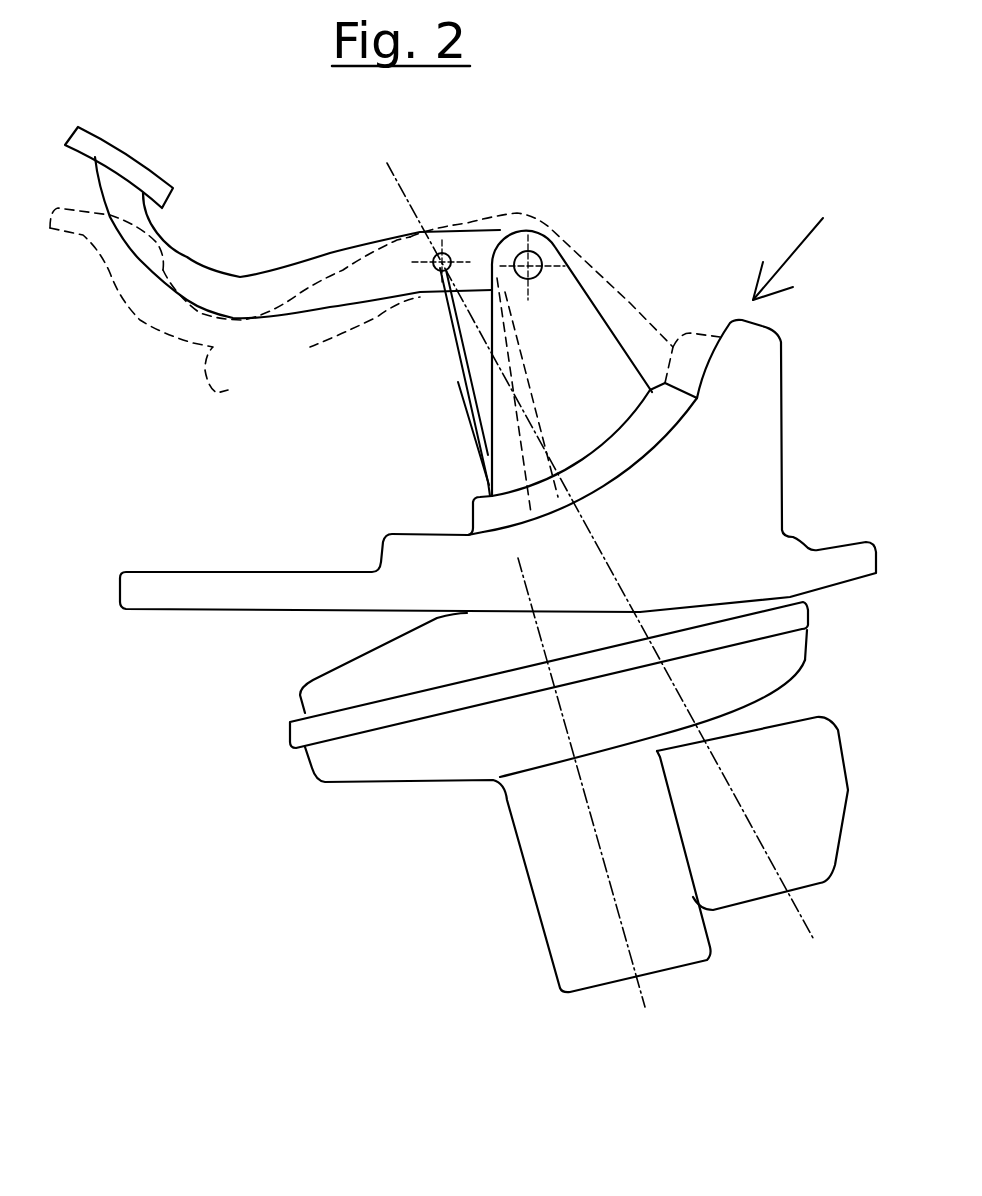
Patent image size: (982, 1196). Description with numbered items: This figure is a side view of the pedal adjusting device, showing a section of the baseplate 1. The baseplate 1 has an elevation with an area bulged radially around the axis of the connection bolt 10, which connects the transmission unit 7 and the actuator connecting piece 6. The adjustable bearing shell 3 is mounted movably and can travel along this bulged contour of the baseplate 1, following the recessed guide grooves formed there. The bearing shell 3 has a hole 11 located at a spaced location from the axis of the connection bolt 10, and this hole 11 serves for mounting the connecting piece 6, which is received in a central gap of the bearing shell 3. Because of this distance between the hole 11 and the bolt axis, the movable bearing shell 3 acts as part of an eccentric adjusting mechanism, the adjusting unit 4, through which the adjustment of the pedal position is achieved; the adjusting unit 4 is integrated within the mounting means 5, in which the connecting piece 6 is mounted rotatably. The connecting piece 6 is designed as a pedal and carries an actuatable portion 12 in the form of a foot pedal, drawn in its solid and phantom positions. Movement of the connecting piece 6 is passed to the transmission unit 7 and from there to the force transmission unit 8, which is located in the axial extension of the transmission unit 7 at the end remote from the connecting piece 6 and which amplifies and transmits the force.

The baseplate 1 is at (297, 595).
The bearing shell 3 is at (567, 320).
The adjusting unit 4 is at (630, 295).
The mounting means 5 is at (379, 171).
The actuator connecting piece 6 is at (173, 273).
The transmission unit 7 is at (463, 367).
The force transmission unit 8 is at (560, 852).
The connection bolt 10 is at (440, 256).
The hole 11 is at (537, 257).
The actuatable portion 12 is at (105, 143).